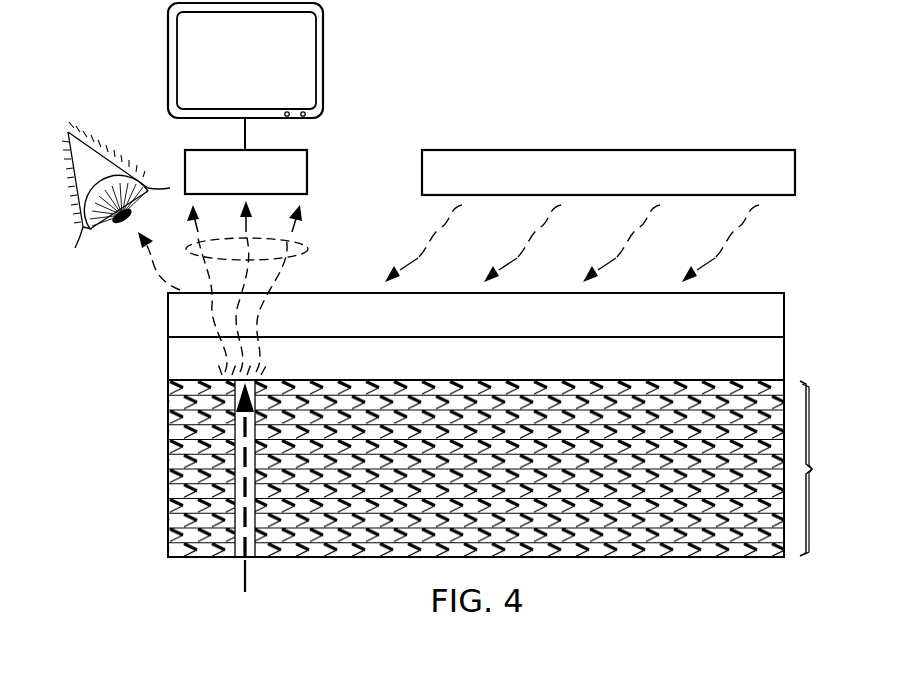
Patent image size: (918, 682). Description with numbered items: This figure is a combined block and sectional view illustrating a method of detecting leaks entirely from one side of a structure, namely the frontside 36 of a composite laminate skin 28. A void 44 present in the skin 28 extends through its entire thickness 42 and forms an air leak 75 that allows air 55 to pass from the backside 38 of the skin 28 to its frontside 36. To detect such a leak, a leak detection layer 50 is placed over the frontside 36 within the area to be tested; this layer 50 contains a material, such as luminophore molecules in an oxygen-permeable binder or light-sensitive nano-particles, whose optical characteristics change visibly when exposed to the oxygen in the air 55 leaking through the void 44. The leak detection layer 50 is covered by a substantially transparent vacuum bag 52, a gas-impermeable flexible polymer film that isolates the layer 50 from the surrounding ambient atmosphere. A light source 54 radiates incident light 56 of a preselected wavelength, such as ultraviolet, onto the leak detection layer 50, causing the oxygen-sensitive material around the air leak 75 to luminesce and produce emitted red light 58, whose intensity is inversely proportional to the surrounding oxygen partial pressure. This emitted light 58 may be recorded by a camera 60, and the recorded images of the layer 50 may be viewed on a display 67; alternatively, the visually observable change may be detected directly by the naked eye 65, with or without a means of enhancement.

The display 67 is at (231, 75).
The naked eye 65 is at (107, 160).
The camera 60 is at (307, 172).
The emitted red light 58 is at (306, 247).
The light source 54 is at (608, 150).
The incident light 56 is at (416, 250).
The vacuum bag 52 is at (777, 312).
The leak detection layer 50 is at (777, 357).
The thickness 42 is at (509, 468).
The skin 28 is at (692, 558).
The backside 38 is at (333, 568).
The void 44 is at (232, 472).
The air 55 is at (243, 577).
The frontside 36 is at (183, 373).
The air leak 75 is at (216, 390).